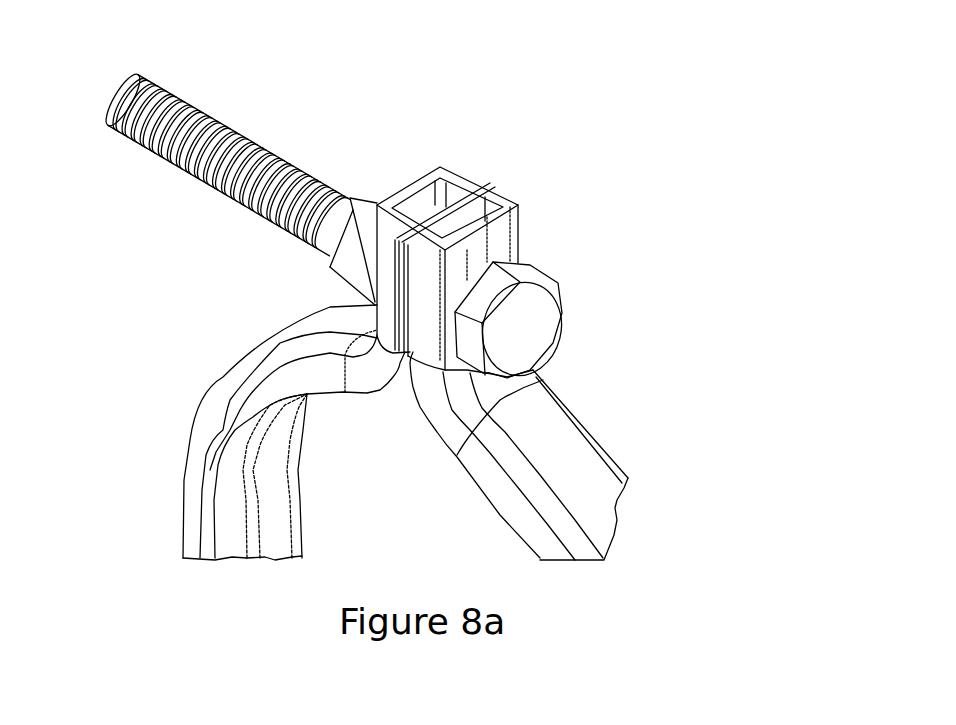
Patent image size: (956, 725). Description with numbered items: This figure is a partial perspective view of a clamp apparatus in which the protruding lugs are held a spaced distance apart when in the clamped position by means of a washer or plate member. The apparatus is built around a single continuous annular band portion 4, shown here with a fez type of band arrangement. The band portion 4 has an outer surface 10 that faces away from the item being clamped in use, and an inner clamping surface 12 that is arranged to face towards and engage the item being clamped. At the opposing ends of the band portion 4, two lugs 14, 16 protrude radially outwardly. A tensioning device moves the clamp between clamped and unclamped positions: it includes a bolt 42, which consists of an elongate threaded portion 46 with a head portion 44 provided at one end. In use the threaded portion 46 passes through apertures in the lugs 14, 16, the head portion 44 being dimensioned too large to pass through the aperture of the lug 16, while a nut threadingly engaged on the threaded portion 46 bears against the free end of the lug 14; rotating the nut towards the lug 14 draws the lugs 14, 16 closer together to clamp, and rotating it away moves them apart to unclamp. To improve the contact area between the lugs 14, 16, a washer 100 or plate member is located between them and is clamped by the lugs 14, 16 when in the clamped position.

The band portion 4 is at (215, 365).
The outer surface 10 is at (587, 462).
The inner clamping surface 12 is at (245, 521).
The lug 14 is at (460, 167).
The lug 16 is at (525, 202).
The bolt 42 is at (320, 152).
The head portion 44 is at (548, 303).
The threaded portion 46 is at (200, 187).
The washer 100 is at (498, 177).